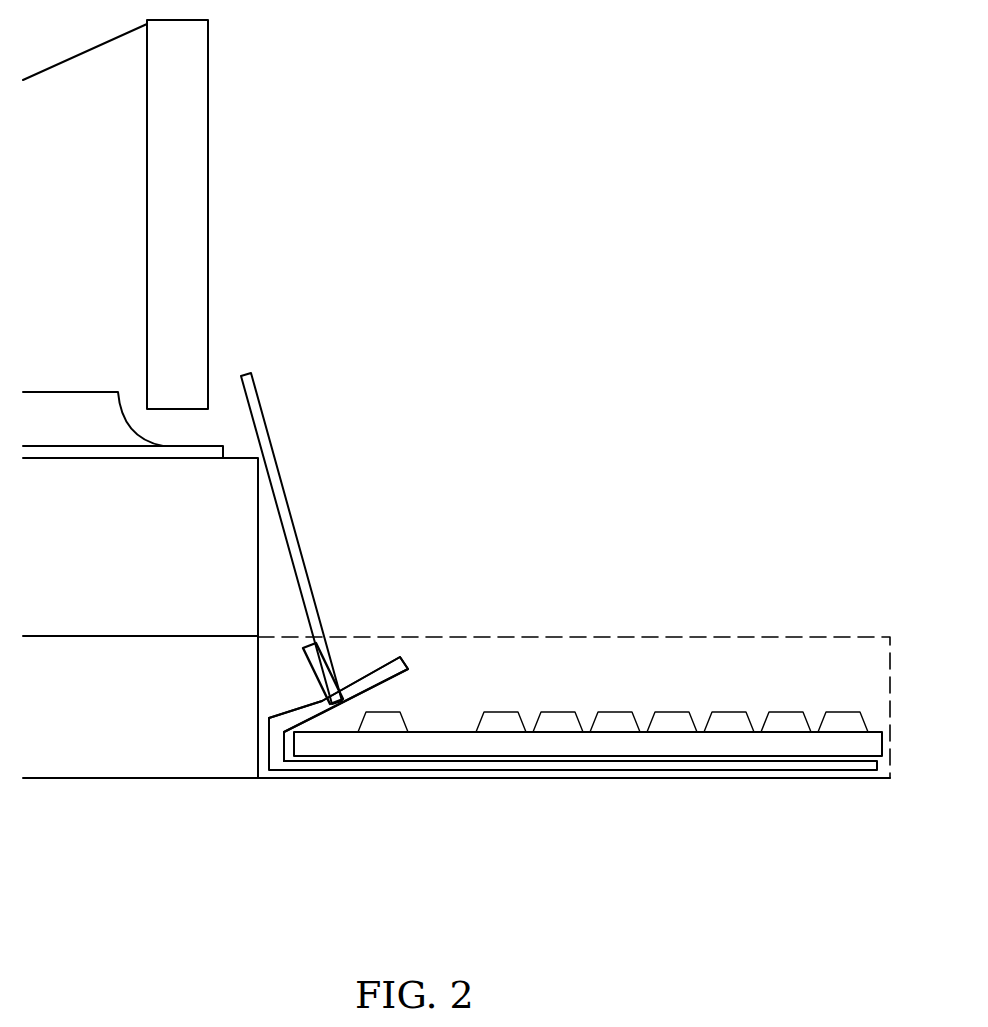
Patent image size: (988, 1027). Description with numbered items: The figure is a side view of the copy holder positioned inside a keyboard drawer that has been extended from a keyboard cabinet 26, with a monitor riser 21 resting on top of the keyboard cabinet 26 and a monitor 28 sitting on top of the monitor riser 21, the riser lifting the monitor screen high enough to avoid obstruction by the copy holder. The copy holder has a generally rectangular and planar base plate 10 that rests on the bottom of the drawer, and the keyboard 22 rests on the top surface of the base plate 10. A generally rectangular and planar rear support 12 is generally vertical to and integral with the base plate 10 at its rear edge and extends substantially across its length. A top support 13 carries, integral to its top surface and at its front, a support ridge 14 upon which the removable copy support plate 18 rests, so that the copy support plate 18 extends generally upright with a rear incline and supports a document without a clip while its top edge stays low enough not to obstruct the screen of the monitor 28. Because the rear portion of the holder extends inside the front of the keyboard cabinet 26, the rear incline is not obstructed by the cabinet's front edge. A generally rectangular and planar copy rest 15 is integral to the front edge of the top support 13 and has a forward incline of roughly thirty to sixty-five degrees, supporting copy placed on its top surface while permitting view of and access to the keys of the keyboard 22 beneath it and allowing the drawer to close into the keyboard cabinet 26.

The base plate 10 is at (475, 765).
The rear support 12 is at (279, 747).
The top support 13 is at (290, 718).
The support ridge 14 is at (314, 642).
The copy rest 15 is at (380, 668).
The copy support plate 18 is at (274, 450).
The monitor riser 21 is at (141, 590).
The keyboard 22 is at (670, 712).
The keyboard cabinet 26 is at (142, 716).
The monitor 28 is at (90, 239).